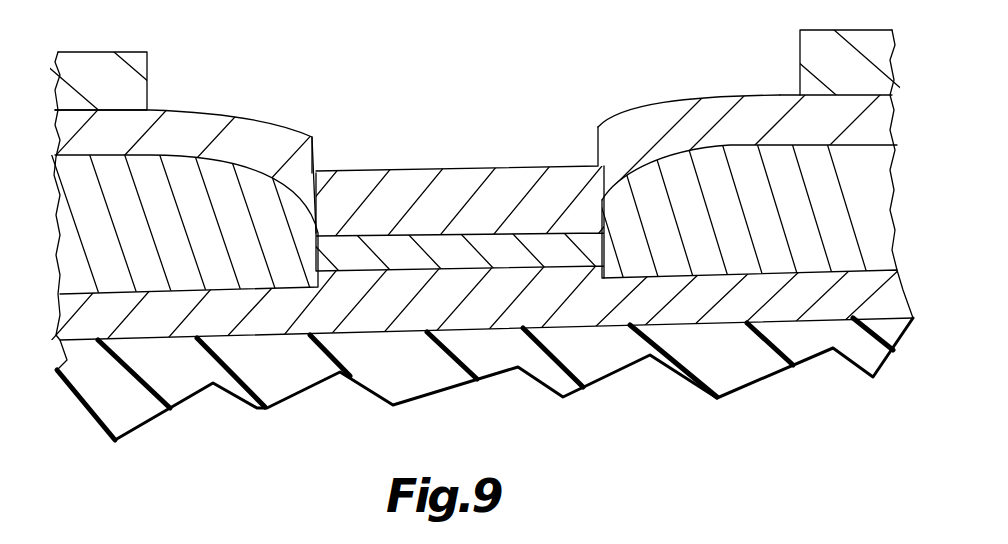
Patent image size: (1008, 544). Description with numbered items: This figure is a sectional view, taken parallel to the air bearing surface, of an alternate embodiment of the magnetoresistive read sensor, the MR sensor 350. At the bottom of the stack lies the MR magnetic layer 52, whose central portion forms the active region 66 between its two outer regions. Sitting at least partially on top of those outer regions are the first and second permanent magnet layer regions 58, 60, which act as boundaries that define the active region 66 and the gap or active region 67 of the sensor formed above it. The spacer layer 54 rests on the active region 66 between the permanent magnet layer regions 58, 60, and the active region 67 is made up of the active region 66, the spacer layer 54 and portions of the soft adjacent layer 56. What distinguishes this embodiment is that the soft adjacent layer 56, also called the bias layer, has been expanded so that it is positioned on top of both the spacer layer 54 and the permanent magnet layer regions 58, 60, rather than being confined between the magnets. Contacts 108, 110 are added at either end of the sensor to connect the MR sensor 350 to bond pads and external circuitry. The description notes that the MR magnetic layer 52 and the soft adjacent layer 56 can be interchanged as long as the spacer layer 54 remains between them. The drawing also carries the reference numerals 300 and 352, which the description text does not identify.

The MR magnetic layer 52 is at (903, 297).
The spacer layer 54 is at (390, 250).
The soft adjacent layer 56 is at (628, 142).
The first permanent magnet layer region 58 is at (158, 190).
The second permanent magnet layer region 60 is at (868, 168).
The active region of MR magnetic layer 66 is at (370, 312).
The active region of MR sensor 67 is at (475, 164).
The contact 108 is at (103, 76).
The contact 110 is at (830, 48).
The serrated anchoring layer 300 is at (887, 327).
The MR sensor 350 is at (78, 420).
The upper left layer 352 is at (247, 118).